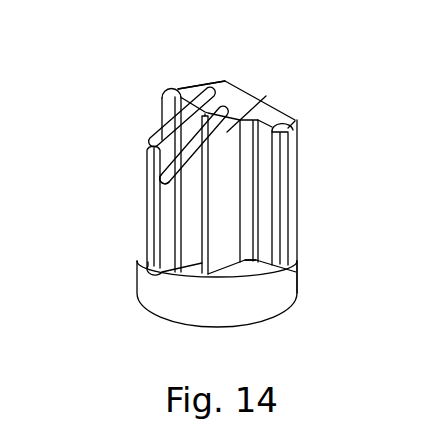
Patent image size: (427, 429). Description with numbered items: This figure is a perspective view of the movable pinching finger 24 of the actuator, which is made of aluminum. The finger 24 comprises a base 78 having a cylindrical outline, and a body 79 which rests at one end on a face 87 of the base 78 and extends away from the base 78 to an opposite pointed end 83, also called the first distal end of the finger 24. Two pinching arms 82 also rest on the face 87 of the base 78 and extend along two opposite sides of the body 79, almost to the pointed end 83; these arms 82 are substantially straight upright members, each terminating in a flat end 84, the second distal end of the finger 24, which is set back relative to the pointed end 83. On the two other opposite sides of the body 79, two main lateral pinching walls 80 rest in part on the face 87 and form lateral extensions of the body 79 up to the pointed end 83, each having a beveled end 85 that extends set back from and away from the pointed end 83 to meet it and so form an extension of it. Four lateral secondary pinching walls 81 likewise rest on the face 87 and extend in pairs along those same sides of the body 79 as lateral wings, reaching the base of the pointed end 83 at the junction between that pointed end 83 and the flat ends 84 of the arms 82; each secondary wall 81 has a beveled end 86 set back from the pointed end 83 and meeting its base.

The movable pinching finger 24 is at (198, 198).
The base 78 is at (160, 312).
The body 79 is at (250, 98).
The main lateral pinching walls 80 is at (148, 262).
The lateral secondary pinching walls 81 is at (147, 228).
The pinching arms 82 is at (163, 100).
The pointed end 83 is at (228, 88).
The flat end 84 is at (172, 92).
The beveled end 85 is at (165, 180).
The beveled end 86 is at (153, 142).
The face 87 is at (253, 272).